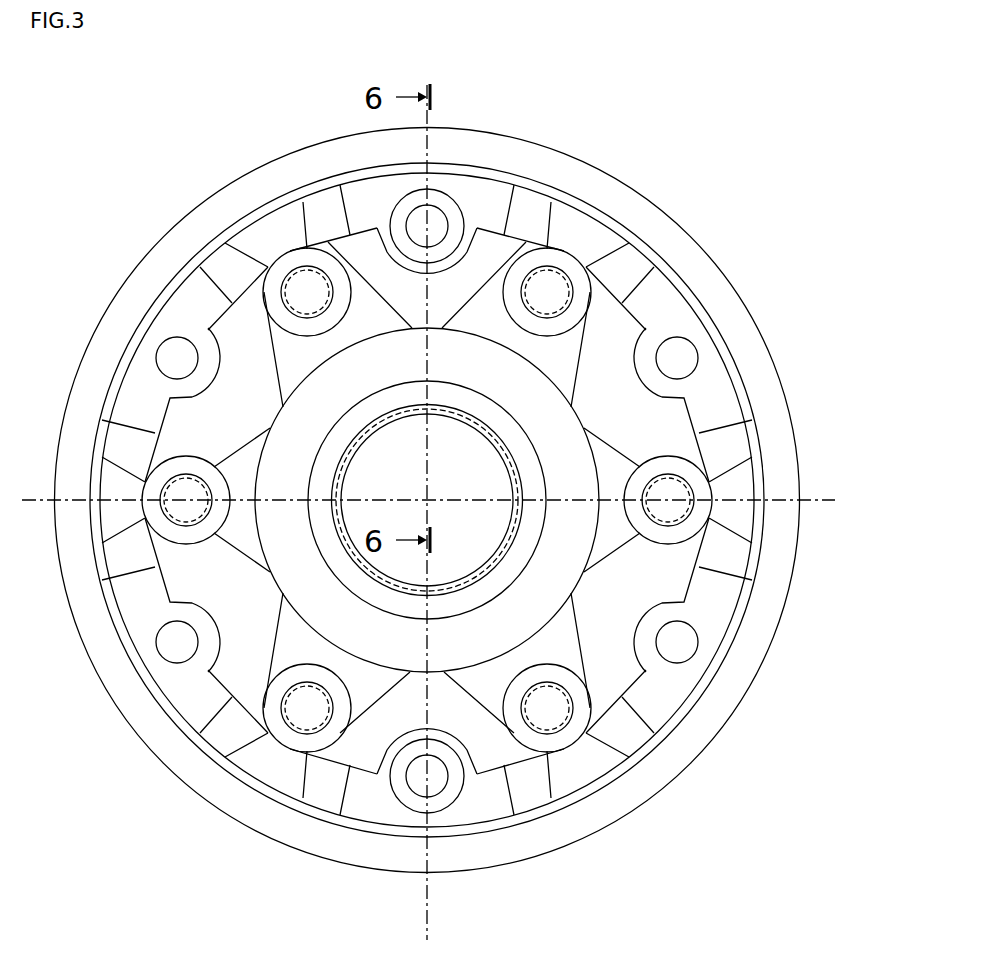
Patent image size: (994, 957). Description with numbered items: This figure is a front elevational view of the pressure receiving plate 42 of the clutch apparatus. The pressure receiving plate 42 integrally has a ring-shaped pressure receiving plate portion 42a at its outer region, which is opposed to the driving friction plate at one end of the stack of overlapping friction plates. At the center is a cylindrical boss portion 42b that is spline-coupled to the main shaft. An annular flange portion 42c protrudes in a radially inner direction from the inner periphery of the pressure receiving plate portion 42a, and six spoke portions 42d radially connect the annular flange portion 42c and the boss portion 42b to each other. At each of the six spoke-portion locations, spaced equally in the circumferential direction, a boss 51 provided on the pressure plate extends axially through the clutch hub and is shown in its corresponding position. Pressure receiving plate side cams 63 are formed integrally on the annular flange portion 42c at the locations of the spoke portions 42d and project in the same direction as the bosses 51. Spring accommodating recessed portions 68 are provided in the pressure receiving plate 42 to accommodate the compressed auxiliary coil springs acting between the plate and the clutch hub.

The pressure receiving plate 42 is at (520, 140).
The pressure receiving plate portion 42a is at (322, 152).
The cylindrical boss portion 42b is at (484, 428).
The annular flange portion 42c is at (388, 815).
The spoke portions 42d is at (633, 352).
The boss 51 is at (562, 268).
The pressure receiving plate side cams 63 is at (592, 262).
The spring accommodating recessed portions 68 is at (437, 222).